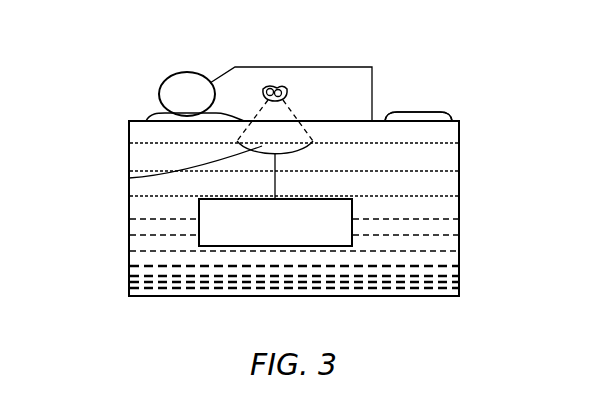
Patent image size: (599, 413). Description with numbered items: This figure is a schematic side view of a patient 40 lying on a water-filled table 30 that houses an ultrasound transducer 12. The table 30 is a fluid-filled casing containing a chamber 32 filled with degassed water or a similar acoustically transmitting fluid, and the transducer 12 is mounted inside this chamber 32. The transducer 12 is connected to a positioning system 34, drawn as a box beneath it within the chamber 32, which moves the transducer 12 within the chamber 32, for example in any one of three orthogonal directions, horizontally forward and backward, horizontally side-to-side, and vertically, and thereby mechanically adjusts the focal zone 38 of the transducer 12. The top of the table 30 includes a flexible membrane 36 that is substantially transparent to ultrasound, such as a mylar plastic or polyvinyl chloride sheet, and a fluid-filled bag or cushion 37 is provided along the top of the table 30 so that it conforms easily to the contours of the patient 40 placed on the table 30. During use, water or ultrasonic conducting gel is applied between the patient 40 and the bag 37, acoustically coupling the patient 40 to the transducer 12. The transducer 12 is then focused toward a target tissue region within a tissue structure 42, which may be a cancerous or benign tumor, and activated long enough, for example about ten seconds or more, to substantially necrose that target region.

The transducer 12 is at (129, 178).
The table 30 is at (459, 165).
The chamber 32 is at (409, 192).
The positioning system 34 is at (340, 246).
The flexible membrane 36 is at (395, 114).
The fluid-filled bag or cushion 37 is at (444, 113).
The focal zone 38 is at (286, 91).
The patient 40 is at (242, 66).
The tissue structure 42 is at (268, 88).